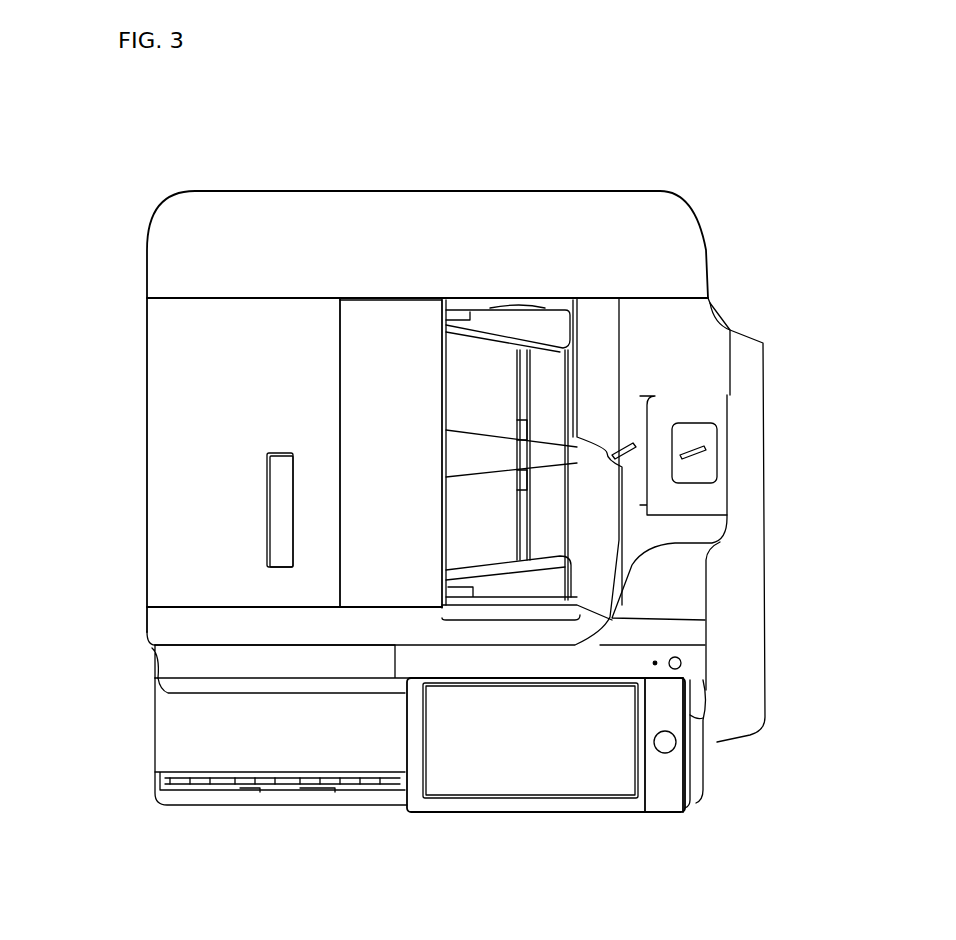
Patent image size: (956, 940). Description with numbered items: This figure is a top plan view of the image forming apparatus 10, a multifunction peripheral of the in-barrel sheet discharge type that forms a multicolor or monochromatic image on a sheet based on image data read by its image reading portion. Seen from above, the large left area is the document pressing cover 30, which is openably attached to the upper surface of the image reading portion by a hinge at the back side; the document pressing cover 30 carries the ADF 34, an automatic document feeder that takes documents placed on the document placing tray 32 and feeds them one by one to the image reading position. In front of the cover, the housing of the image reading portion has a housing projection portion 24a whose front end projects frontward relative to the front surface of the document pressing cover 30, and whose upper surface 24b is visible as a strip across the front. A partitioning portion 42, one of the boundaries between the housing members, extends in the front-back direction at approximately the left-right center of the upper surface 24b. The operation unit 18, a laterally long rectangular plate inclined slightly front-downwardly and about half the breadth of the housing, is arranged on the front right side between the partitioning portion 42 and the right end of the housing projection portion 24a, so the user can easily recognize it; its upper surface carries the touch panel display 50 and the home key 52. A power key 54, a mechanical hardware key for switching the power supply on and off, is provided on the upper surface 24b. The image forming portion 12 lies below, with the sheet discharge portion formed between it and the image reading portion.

The image forming apparatus 10 is at (271, 103).
The image forming portion 12 is at (190, 750).
The operation unit 18 is at (663, 783).
The housing projection portion 24a is at (150, 667).
The upper surface 24b is at (637, 663).
The document pressing cover 30 is at (190, 574).
The document placing tray 32 is at (482, 375).
The ADF 34 is at (400, 332).
The partitioning portion 42 is at (398, 660).
The touch panel display 50 is at (538, 777).
The home key 52 is at (676, 742).
The power key 54 is at (681, 663).